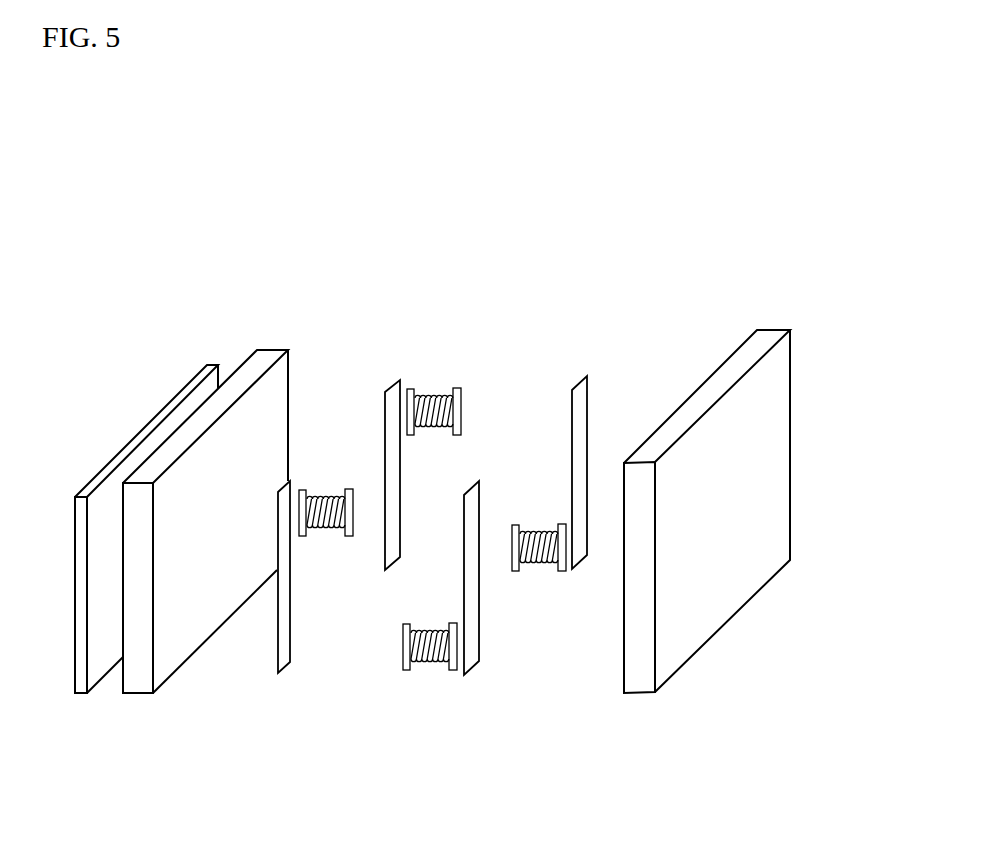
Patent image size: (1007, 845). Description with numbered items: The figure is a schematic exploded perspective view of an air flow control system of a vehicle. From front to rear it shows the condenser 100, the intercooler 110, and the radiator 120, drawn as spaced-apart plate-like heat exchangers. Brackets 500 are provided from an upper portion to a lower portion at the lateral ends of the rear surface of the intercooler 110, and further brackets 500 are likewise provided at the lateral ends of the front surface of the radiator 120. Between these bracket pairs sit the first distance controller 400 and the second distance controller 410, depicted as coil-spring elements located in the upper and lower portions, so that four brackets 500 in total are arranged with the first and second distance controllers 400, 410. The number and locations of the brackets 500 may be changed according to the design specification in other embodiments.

The condenser 100 is at (137, 432).
The intercooler 110 is at (138, 685).
The radiator 120 is at (742, 350).
The first distance controller 400 is at (528, 530).
The second distance controller 410 is at (333, 532).
The bracket 500 is at (287, 665).